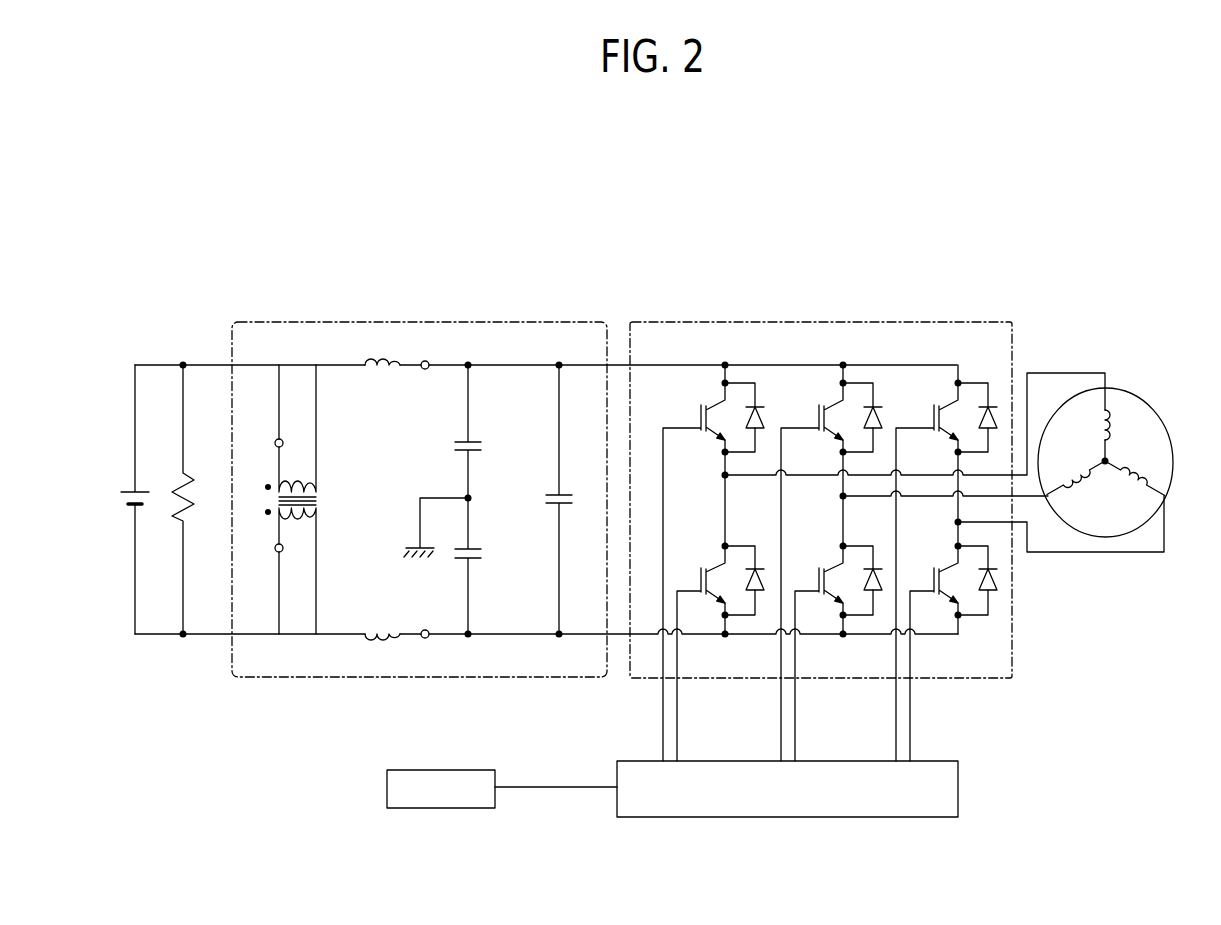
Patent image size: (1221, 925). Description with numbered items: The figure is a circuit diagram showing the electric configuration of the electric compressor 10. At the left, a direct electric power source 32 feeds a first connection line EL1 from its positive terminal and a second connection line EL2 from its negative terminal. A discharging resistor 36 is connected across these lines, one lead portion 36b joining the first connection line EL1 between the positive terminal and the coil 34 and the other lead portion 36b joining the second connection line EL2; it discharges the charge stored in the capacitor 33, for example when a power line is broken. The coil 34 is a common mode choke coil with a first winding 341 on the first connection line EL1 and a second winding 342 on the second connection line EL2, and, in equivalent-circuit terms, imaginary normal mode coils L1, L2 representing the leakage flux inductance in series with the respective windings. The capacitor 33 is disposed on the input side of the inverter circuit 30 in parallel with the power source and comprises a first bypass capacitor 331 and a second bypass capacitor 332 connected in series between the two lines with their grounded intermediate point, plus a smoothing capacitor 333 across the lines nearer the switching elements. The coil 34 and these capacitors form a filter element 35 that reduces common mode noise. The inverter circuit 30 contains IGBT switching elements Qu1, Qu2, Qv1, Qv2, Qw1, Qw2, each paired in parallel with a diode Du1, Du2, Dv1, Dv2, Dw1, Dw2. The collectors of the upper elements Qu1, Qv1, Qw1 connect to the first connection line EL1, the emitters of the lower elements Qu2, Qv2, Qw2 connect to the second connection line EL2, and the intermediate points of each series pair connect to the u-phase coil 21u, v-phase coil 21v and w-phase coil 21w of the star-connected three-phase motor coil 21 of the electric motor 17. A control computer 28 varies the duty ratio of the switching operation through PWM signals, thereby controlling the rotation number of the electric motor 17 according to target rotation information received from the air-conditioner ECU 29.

The electric compressor 10 is at (1118, 401).
The electric motor 17 is at (1119, 370).
The motor coil 21 is at (1123, 437).
The u-phase coil 21u is at (1118, 425).
The v-phase coil 21v is at (1078, 492).
The w-phase coil 21w is at (1140, 478).
The control computer 28 is at (960, 787).
The air-conditioner ECU 29 is at (455, 768).
The inverter circuit 30 is at (913, 318).
The direct electric power source 32 is at (139, 486).
The capacitor 33 is at (499, 500).
The first bypass capacitor 331 is at (477, 442).
The second bypass capacitor 332 is at (477, 549).
The smoothing capacitor 333 is at (567, 495).
The coil 34 is at (285, 499).
The first winding 341 is at (316, 470).
The second winding 342 is at (316, 530).
The filter element 35 is at (587, 318).
The resistor 36 is at (185, 483).
The lead portion 36b is at (181, 362).
The first connection line EL1 is at (201, 362).
The second connection line EL2 is at (198, 656).
The imaginary normal mode coil L1 is at (383, 376).
The imaginary normal mode coil L2 is at (385, 622).
The switching element Qu1 is at (696, 415).
The switching element Qu2 is at (699, 577).
The switching element Qv1 is at (814, 415).
The switching element Qv2 is at (815, 577).
The switching element Qw1 is at (930, 415).
The switching element Qw2 is at (931, 577).
The diode Du1 is at (754, 404).
The diode Du2 is at (755, 568).
The diode Dv1 is at (872, 404).
The diode Dv2 is at (873, 568).
The diode Dw1 is at (989, 405).
The diode Dw2 is at (995, 586).